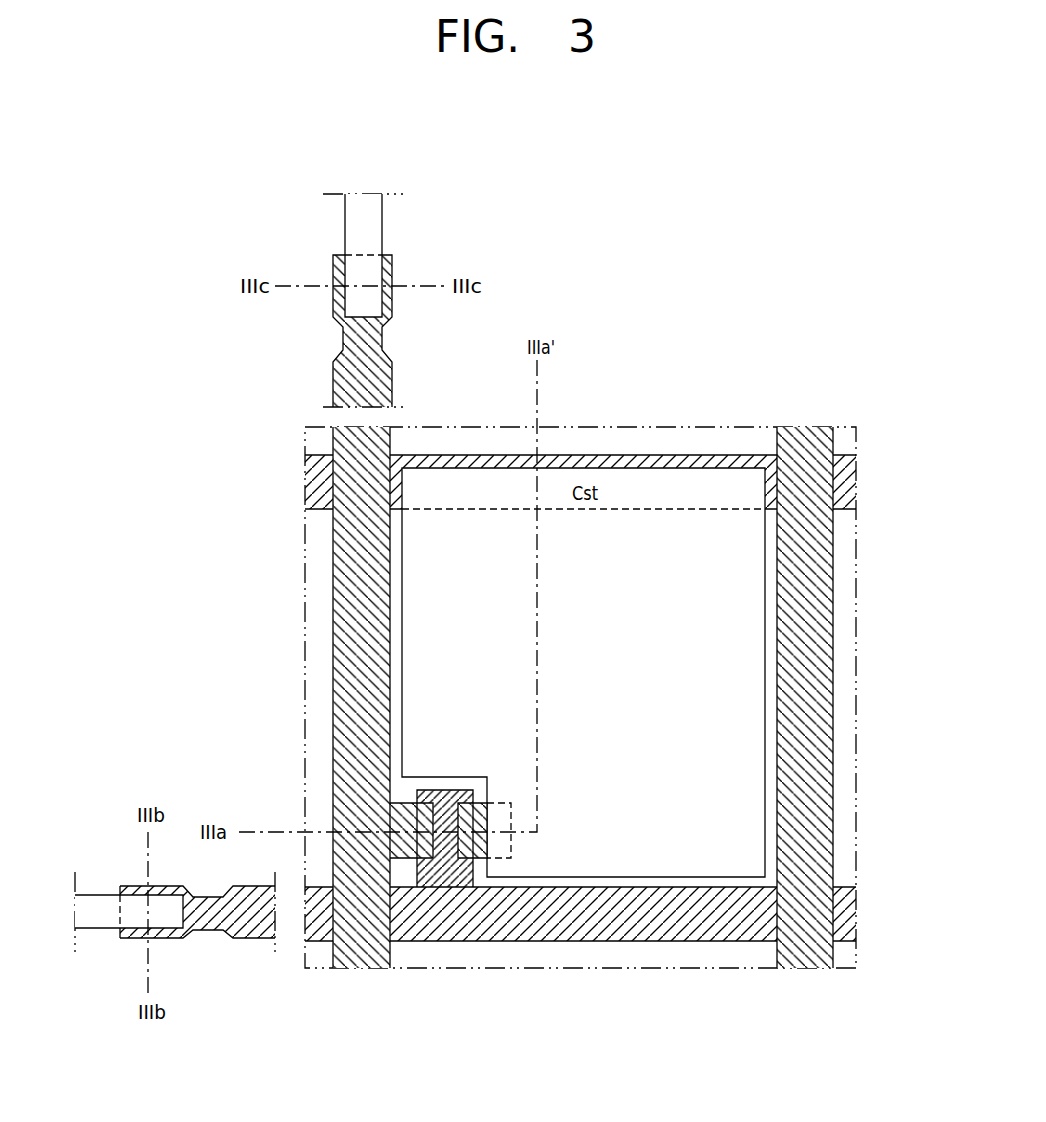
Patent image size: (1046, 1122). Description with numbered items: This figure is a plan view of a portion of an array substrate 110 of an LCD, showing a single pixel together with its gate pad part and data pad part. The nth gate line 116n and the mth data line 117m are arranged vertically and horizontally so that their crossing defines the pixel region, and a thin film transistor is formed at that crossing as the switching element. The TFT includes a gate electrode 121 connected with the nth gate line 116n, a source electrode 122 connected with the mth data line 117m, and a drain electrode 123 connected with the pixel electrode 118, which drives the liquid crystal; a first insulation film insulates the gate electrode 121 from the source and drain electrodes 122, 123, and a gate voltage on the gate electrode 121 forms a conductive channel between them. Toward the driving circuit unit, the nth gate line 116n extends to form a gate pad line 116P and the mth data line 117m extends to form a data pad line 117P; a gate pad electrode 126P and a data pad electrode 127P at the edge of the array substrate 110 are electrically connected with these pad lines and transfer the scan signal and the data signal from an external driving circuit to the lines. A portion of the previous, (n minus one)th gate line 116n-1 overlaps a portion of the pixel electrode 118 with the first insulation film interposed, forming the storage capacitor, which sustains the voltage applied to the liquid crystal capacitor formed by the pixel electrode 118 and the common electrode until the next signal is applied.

The array substrate 110 is at (808, 409).
The (n−1)th gate line 116n-1 is at (855, 482).
The nth gate line 116n is at (850, 916).
The gate pad line 116P is at (193, 930).
The mth data line 117m is at (348, 596).
The data pad line 117P is at (343, 384).
The pixel electrode 118 is at (748, 687).
The gate electrode 121 is at (447, 802).
The source electrode 122 is at (405, 850).
The drain electrode 123 is at (481, 860).
The gate pad electrode 126P is at (97, 928).
The data pad electrode 127P is at (345, 224).